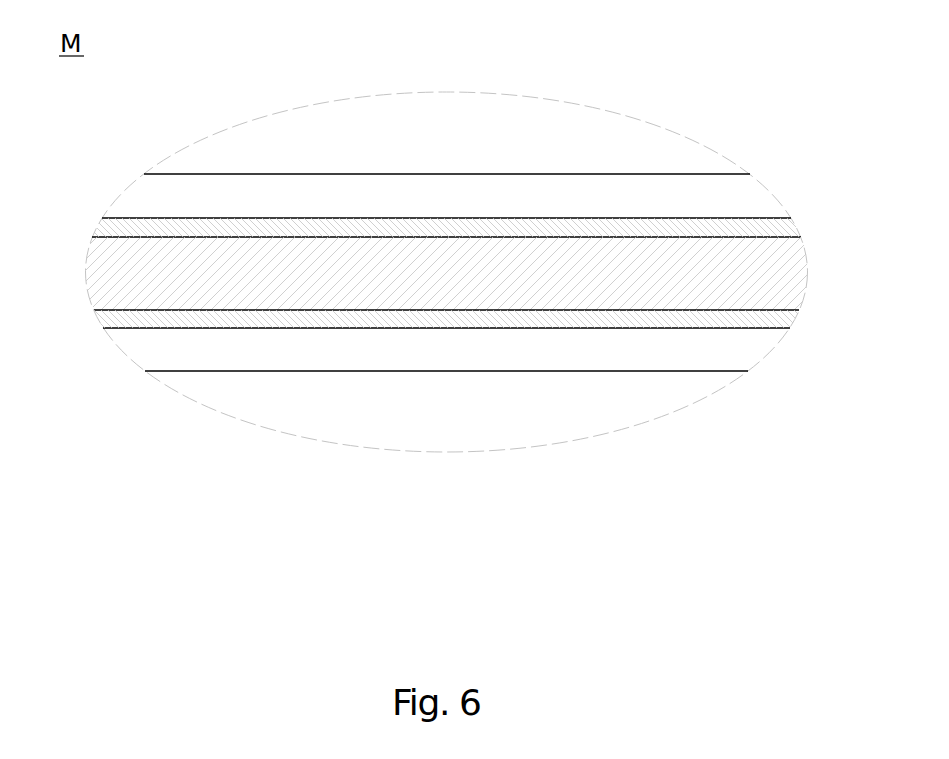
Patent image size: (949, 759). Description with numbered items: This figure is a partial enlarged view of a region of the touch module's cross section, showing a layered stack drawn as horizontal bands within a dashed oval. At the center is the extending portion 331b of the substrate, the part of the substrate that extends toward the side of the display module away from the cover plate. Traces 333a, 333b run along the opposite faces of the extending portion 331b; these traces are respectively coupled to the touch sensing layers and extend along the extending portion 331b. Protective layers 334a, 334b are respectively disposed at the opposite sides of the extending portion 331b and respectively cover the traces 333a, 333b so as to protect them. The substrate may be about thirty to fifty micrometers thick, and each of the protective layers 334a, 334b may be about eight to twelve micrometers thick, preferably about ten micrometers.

The protective layer 334a is at (760, 196).
The trace 333a is at (792, 221).
The extending portion 331b is at (795, 272).
The trace 333b is at (788, 322).
The protective layer 334b is at (760, 350).